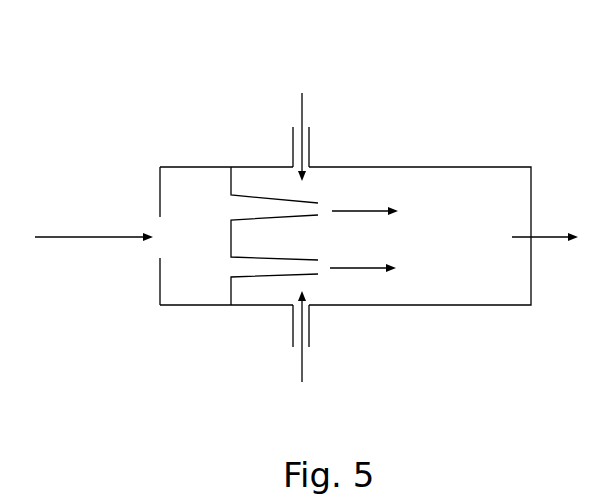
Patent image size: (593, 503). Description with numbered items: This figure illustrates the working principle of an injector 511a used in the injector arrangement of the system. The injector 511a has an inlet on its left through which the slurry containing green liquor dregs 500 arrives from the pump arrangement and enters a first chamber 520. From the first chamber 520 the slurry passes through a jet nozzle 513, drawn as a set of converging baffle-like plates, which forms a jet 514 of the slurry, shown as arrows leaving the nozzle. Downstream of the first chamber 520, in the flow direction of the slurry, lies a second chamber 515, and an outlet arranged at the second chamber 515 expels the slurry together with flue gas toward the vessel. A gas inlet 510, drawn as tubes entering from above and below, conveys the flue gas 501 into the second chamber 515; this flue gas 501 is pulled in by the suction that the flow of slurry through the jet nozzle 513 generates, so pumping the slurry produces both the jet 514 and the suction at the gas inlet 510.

The slurry containing green liquor dregs 500 is at (78, 237).
The flue gas 501 is at (299, 106).
The gas inlet 510 is at (310, 153).
The injector 511a is at (443, 135).
The jet nozzle 513 is at (253, 210).
The jet 514 is at (363, 213).
The second chamber 515 is at (497, 295).
The first chamber 520 is at (193, 293).